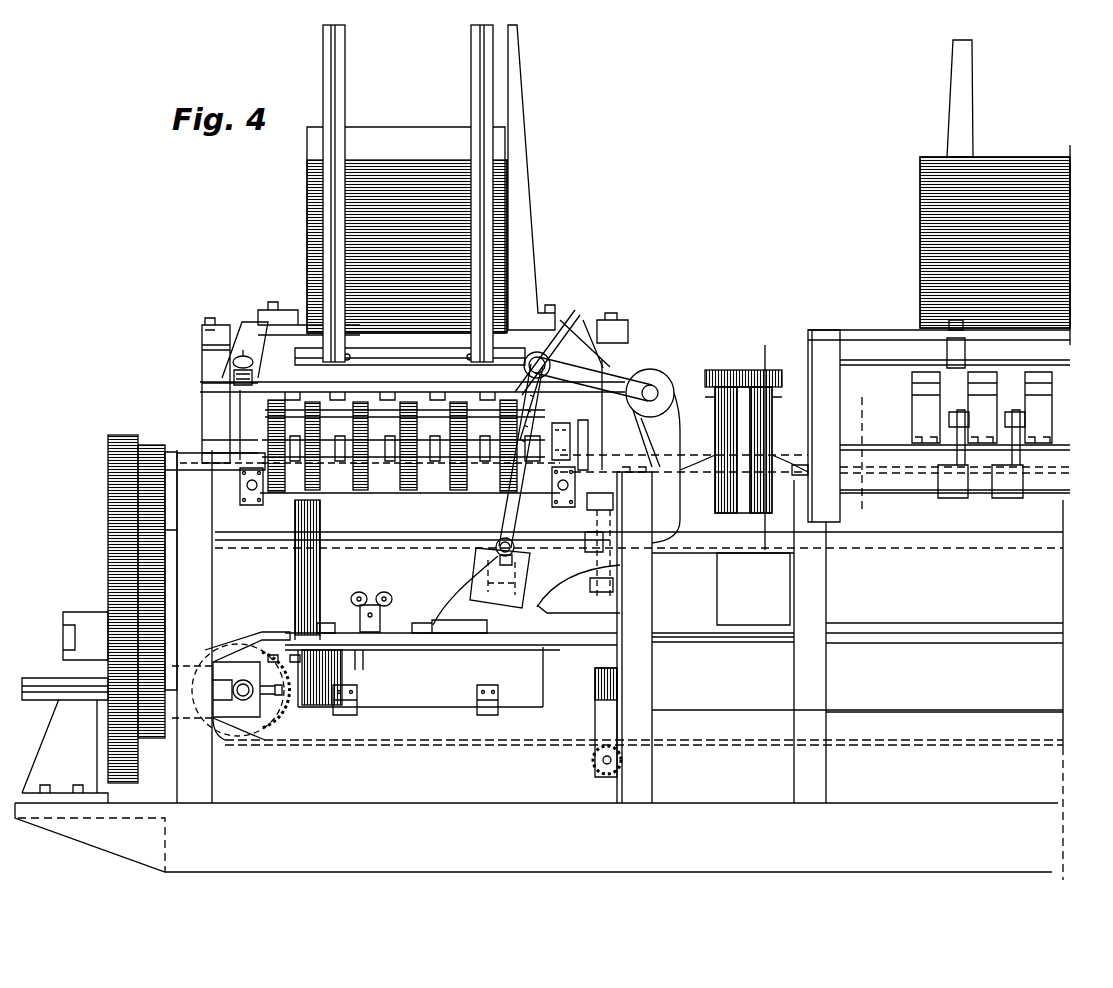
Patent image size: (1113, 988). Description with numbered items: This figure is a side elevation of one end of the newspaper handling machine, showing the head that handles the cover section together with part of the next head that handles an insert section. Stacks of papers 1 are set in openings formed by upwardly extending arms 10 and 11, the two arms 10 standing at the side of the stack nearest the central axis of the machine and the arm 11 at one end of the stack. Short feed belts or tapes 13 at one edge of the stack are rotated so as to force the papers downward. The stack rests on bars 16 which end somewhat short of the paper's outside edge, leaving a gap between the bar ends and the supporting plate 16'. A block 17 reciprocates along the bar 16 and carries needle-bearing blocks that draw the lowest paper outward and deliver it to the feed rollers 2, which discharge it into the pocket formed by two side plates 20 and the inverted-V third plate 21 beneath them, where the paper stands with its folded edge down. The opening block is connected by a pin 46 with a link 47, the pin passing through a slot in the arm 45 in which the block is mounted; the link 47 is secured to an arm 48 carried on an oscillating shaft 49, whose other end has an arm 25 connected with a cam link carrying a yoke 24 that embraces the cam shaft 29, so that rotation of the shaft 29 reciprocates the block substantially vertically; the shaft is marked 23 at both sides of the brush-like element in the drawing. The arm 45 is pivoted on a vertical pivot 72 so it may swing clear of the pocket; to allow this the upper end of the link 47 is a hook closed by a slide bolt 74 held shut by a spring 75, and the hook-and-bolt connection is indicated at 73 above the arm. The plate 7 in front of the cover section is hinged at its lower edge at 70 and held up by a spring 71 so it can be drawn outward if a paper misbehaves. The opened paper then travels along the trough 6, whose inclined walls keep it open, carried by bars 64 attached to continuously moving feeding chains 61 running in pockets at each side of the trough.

The stack of papers 1 is at (307, 190).
The feed rollers 2 is at (318, 410).
The trough 6 is at (944, 667).
The plate 7 is at (310, 567).
The upwardly extending arms 10 is at (345, 72).
The upwardly extending arm 11 is at (522, 88).
The feed belts or tapes 13 is at (412, 393).
The bars 16 is at (982, 407).
The supporting plate 16' is at (879, 551).
The block 17 is at (962, 410).
The side plates 20 is at (478, 610).
The third plate 21 is at (520, 690).
The shaft 23 is at (745, 430).
The yoke 24 is at (743, 450).
The arm 25 is at (861, 455).
The shaft 29 is at (262, 545).
The arm 45 is at (540, 578).
The pin 46 is at (497, 545).
The link 47 is at (518, 498).
The arm 48 is at (620, 360).
The shaft 49 is at (657, 385).
The paper feeding chain 61 is at (437, 745).
The bars 64 is at (270, 748).
The hinge 70 is at (322, 628).
The spring 71 is at (387, 595).
The vertical pivot 72 is at (590, 548).
The lever 73 is at (571, 322).
The slide bolt 74 is at (585, 337).
The spring 75 is at (593, 379).